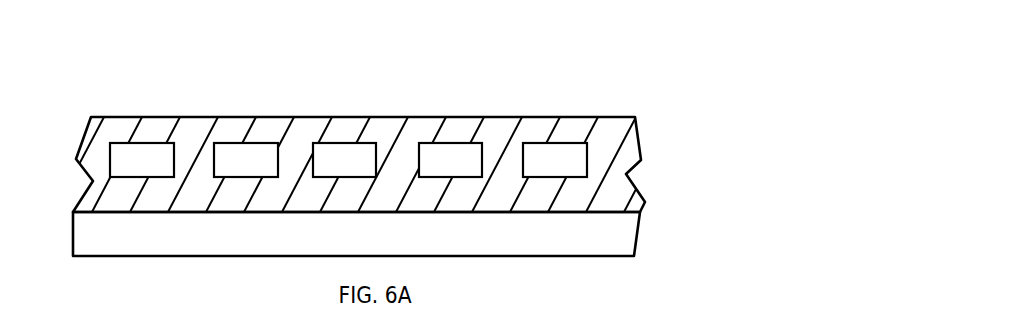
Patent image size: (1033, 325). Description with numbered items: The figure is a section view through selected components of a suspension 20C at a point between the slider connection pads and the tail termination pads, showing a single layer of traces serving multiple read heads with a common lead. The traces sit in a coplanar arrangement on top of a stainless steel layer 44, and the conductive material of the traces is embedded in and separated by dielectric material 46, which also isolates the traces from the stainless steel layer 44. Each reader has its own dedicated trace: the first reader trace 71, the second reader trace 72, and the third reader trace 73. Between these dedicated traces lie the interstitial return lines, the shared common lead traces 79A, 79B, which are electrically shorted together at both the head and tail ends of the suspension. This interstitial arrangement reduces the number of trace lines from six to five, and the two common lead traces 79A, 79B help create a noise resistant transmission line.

The suspension 20C is at (87, 96).
The dielectric material 46 is at (634, 147).
The stainless steel layer 44 is at (631, 233).
The trace R1 71 is at (148, 143).
The common lead trace Rg 79A is at (262, 143).
The trace R2 72 is at (370, 143).
The common lead trace Rg 79B is at (450, 143).
The trace R3 73 is at (565, 143).